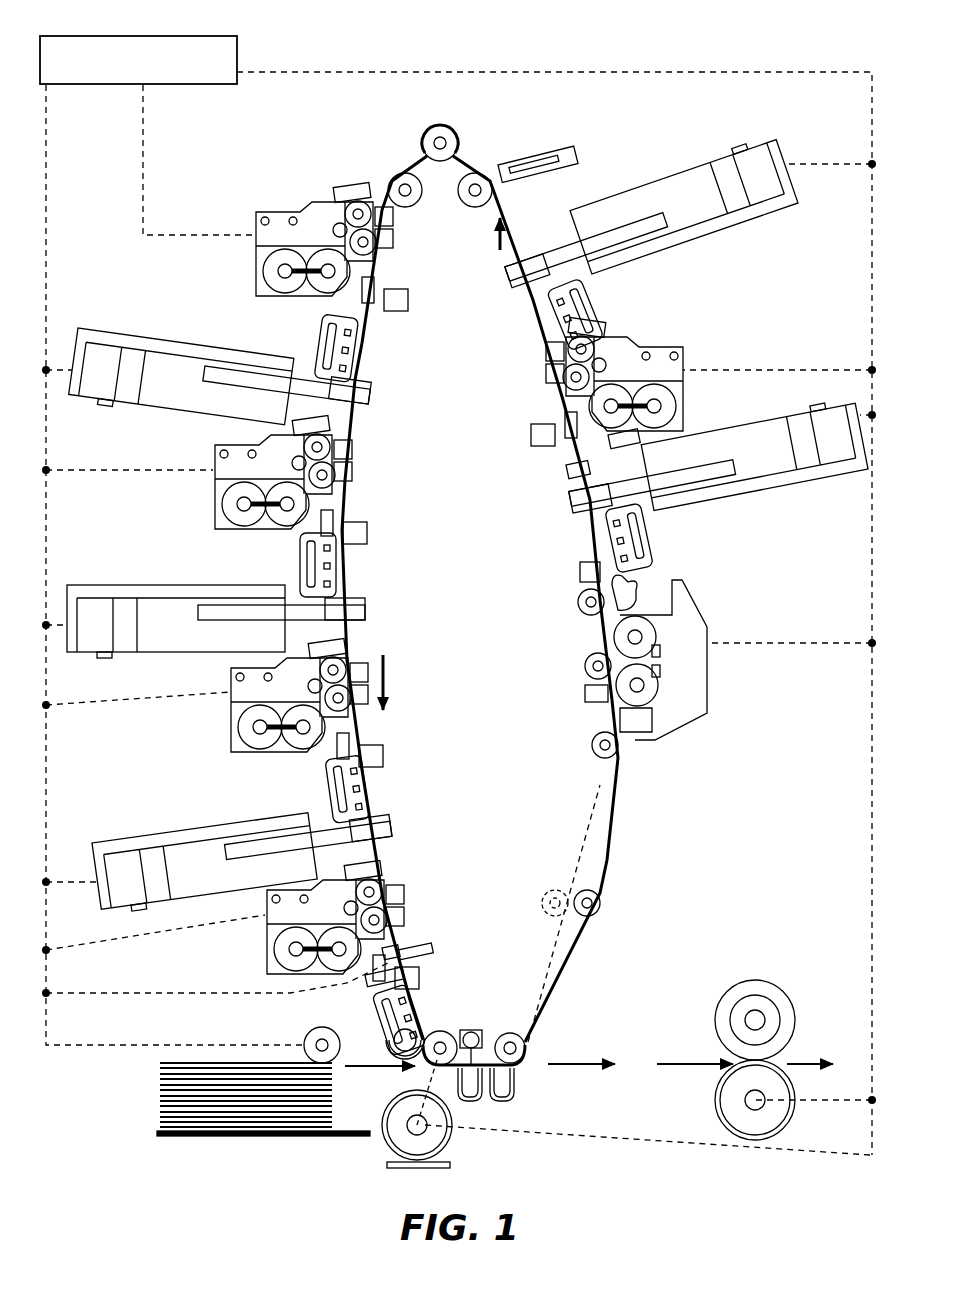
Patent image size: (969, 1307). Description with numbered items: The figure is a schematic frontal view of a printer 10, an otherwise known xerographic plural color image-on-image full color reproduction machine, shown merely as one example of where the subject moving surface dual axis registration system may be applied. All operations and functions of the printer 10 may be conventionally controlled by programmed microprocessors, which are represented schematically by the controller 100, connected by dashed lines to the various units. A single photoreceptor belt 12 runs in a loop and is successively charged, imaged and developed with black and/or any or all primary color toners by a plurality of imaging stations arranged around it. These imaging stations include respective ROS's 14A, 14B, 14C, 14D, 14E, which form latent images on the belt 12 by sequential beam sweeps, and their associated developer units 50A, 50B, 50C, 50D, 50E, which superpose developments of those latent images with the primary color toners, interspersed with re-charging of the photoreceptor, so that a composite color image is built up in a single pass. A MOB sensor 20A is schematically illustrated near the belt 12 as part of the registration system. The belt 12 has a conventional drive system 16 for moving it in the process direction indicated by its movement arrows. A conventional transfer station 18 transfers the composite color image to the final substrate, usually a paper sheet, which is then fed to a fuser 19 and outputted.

The printer 10 is at (562, 66).
The controller 100 is at (237, 50).
The photoreceptor belt 12 is at (576, 958).
The ROS 14A is at (124, 842).
The ROS 14B is at (124, 584).
The ROS 14C is at (133, 326).
The ROS 14D is at (648, 188).
The ROS 14E is at (734, 432).
The developer unit 50A is at (300, 978).
The developer unit 50B is at (258, 753).
The developer unit 50C is at (254, 531).
The developer unit 50D is at (282, 298).
The developer unit 50E is at (683, 348).
The MOB sensor 20A is at (397, 958).
The drive system 16 is at (390, 1142).
The transfer station 18 is at (500, 1112).
The fuser 19 is at (810, 1037).